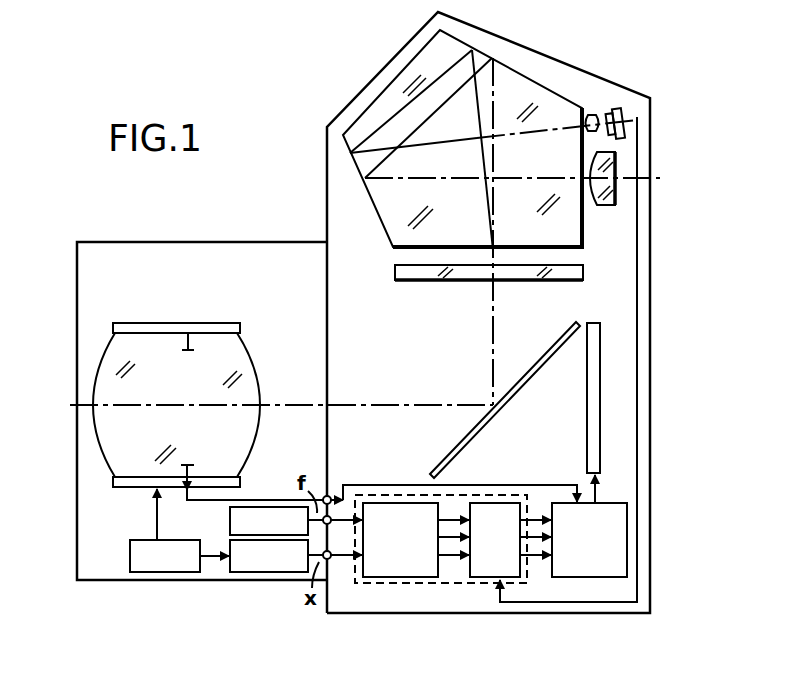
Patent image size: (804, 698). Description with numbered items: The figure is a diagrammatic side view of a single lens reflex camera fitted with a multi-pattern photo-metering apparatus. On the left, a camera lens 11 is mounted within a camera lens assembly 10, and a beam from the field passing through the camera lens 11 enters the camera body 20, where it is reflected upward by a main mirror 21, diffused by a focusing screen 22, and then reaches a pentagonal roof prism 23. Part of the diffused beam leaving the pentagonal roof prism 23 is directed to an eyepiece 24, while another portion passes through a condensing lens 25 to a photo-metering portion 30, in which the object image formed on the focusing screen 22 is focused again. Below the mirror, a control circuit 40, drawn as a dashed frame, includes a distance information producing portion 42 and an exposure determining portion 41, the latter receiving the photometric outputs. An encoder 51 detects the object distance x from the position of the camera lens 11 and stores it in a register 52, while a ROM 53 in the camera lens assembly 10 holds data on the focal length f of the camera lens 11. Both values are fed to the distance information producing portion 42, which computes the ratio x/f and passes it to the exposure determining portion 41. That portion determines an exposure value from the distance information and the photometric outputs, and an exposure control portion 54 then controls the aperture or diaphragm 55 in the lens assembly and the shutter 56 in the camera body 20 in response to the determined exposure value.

The camera lens assembly 10 is at (120, 246).
The camera lens 11 is at (107, 362).
The camera body 20 is at (330, 213).
The main mirror 21 is at (547, 347).
The focusing screen 22 is at (585, 273).
The pentagonal roof prism 23 is at (517, 83).
The eyepiece 24 is at (616, 193).
The condensing lens 25 is at (591, 113).
The photo-metering portion 30 is at (609, 110).
The control circuit 40 is at (452, 585).
The exposure determining portion 41 is at (484, 578).
The distance information producing portion 42 is at (401, 578).
The encoder 51 is at (148, 573).
The register 52 is at (262, 573).
The ROM 53 is at (230, 521).
The exposure control portion 54 is at (588, 578).
The aperture or diaphragm 55 is at (193, 457).
The shutter 56 is at (600, 417).